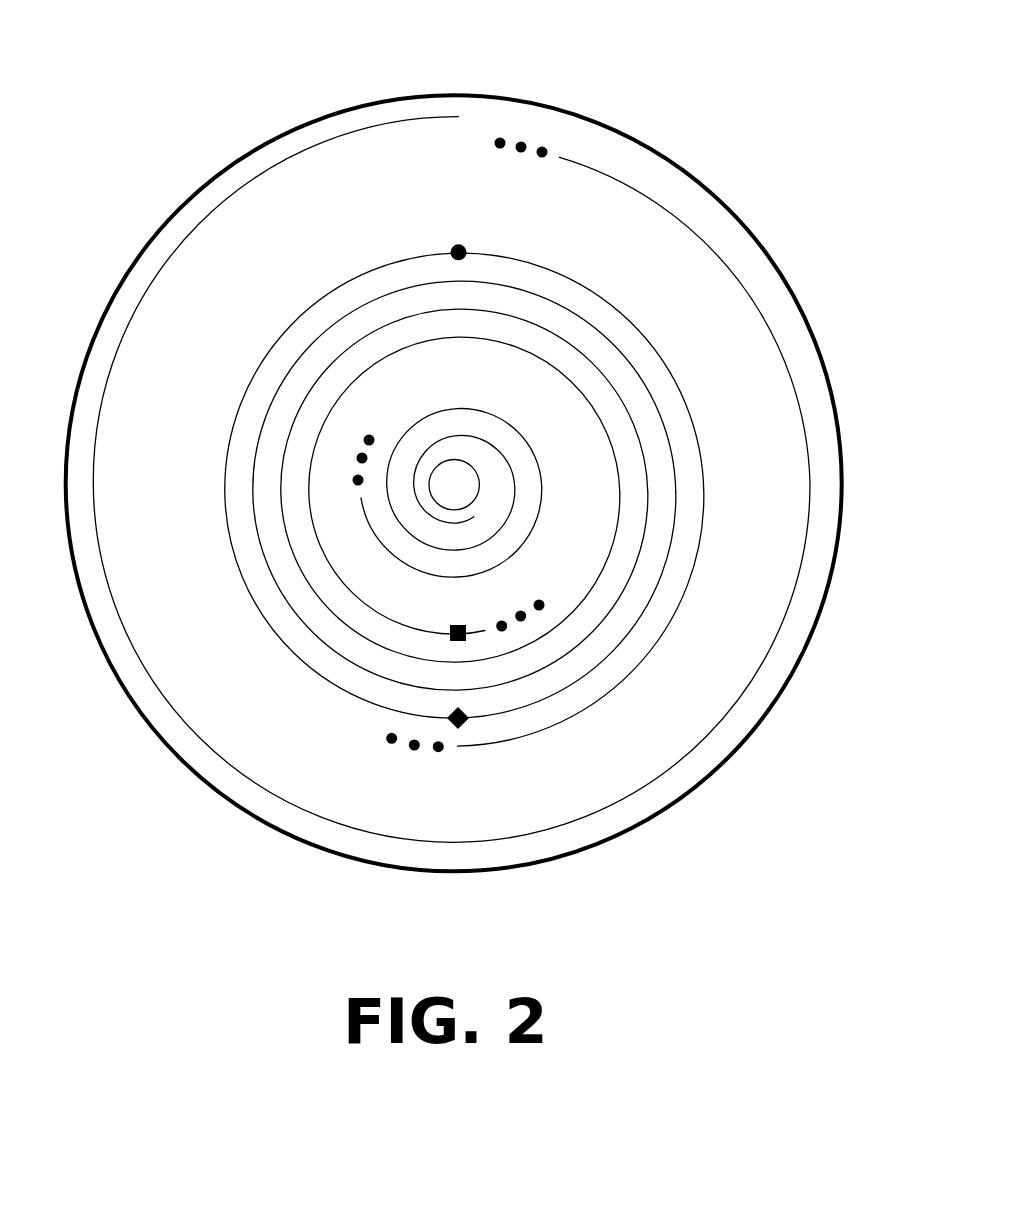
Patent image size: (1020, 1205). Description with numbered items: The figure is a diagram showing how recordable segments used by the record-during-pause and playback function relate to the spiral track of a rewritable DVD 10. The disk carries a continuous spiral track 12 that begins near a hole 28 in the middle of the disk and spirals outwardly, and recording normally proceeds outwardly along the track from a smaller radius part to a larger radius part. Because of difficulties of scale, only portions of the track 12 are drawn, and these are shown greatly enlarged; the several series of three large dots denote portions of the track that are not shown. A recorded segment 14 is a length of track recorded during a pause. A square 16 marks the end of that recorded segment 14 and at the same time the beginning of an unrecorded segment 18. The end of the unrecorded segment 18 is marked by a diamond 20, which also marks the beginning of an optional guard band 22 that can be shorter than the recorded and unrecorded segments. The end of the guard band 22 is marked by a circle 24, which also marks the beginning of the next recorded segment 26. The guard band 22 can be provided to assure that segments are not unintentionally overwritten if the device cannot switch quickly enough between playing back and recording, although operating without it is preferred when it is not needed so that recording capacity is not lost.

The rewritable DVD 10 is at (447, 78).
The spiral track 12 is at (513, 479).
The recorded segment 14 is at (485, 632).
The square 16 is at (458, 633).
The unrecorded segment 18 is at (348, 662).
The diamond 20 is at (458, 718).
The guard band 22 is at (232, 425).
The circle 24 is at (458, 252).
The next recorded segment 26 is at (538, 263).
The hole 28 is at (478, 497).